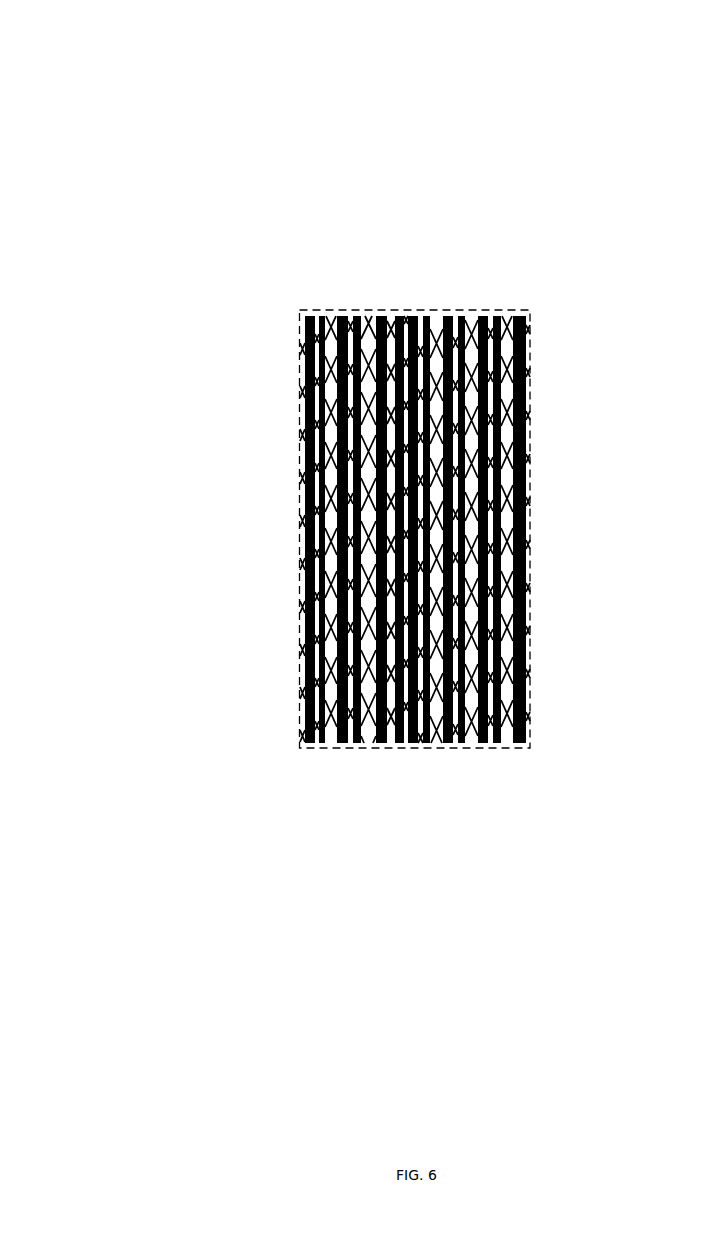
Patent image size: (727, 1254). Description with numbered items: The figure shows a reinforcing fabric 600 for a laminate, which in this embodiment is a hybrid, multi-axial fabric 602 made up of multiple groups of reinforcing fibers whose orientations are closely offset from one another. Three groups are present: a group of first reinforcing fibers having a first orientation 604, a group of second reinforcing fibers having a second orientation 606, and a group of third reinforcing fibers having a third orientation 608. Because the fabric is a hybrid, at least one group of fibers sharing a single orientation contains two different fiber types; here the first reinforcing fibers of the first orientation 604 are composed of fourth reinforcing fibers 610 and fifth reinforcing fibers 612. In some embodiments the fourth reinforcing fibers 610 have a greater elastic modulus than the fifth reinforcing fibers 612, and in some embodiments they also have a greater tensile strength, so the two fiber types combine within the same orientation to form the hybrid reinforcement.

The reinforcing fabric 600 is at (96, 66).
The hybrid, multi-axial fabric 602 is at (522, 398).
The first orientation 604 is at (370, 305).
The second orientation 606 is at (517, 463).
The third orientation 608 is at (297, 522).
The fourth reinforcing fibers 610 is at (400, 734).
The fifth reinforcing fibers 612 is at (477, 735).